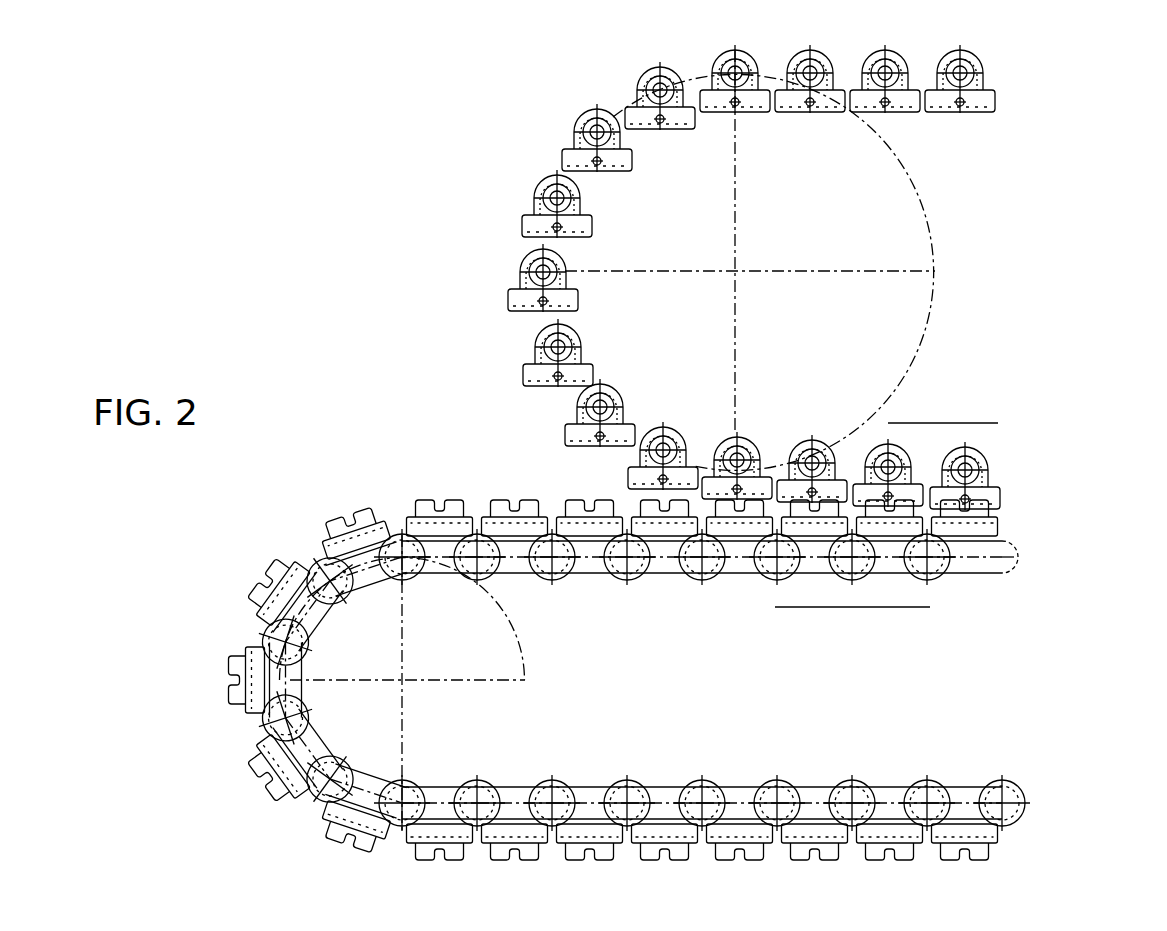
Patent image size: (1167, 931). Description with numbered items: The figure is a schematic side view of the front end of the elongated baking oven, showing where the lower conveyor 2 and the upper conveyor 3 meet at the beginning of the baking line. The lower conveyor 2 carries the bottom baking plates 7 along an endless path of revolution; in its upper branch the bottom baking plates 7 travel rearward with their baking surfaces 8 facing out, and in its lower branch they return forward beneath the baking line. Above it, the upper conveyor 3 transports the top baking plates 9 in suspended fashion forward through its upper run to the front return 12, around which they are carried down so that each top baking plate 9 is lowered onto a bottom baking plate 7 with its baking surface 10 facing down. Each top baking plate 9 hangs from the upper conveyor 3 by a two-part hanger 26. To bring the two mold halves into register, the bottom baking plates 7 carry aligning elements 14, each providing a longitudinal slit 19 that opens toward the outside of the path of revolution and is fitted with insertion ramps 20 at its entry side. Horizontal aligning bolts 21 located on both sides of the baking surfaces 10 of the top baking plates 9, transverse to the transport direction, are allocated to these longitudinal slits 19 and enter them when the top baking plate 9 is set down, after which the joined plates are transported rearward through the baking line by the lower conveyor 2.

The lower conveyor 2 is at (644, 639).
The upper conveyor 3 is at (824, 277).
The bottom baking plate 7 is at (255, 680).
The baking surface 8 is at (283, 593).
The top baking plate 9 is at (982, 97).
The baking surface 10 is at (790, 112).
The front return 12 is at (893, 238).
The aligning element 14 is at (356, 540).
The longitudinal slit 19 is at (440, 508).
The insertion ramp 20 is at (350, 522).
The aligning bolt 21 is at (663, 118).
The two-part hanger 26 is at (590, 342).